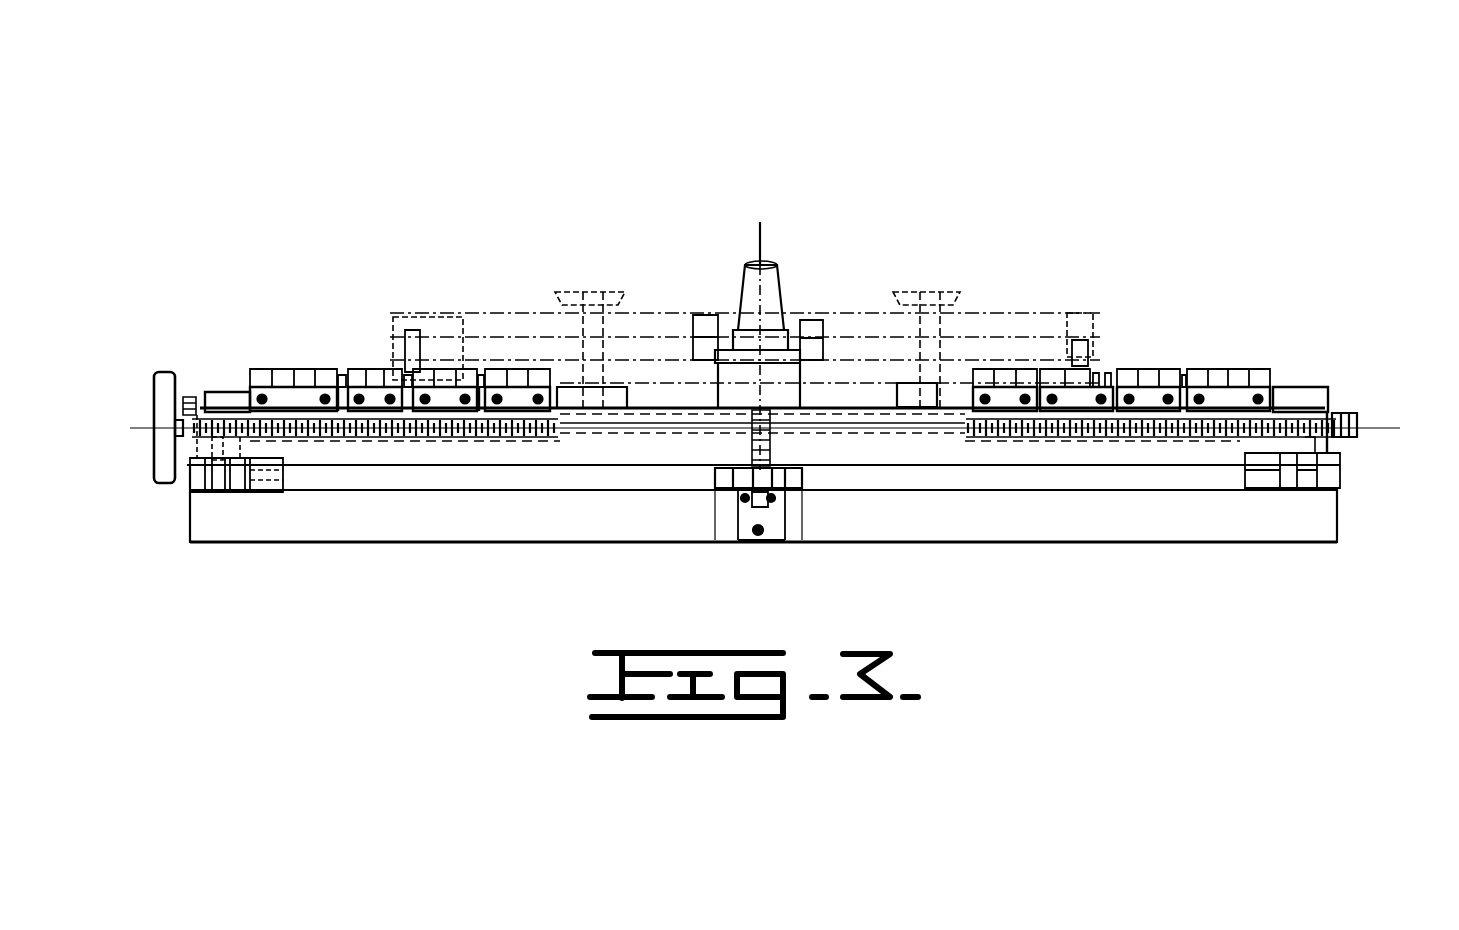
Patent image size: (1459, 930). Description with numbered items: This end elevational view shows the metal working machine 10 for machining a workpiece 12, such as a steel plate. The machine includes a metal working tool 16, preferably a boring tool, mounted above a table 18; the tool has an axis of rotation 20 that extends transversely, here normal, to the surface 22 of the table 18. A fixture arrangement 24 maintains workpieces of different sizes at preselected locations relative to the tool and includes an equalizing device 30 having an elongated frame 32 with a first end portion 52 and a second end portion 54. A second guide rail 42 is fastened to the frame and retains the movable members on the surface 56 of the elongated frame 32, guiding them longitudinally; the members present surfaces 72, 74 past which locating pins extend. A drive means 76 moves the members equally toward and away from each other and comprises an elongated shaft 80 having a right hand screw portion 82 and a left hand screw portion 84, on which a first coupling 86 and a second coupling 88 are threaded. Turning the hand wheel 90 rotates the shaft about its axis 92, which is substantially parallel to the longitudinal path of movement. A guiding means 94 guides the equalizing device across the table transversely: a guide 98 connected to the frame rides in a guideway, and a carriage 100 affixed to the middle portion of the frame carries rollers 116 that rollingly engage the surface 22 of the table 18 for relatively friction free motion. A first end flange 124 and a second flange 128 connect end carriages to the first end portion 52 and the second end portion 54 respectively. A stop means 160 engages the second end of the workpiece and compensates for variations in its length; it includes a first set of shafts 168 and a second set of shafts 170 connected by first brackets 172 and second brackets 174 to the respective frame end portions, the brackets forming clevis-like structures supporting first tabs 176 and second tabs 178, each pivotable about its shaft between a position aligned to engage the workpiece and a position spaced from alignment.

The metal working machine 10 is at (1115, 110).
The workpiece 12 is at (1103, 358).
The metal working tool 16 is at (782, 283).
The table 18 is at (1340, 512).
The axis of rotation 20 is at (760, 222).
The surface of the table 22 is at (990, 500).
The fixture arrangement 24 is at (1050, 212).
The equalizing device 30 is at (1265, 352).
The elongated frame 32 is at (1048, 447).
The second guide rail 42 is at (200, 398).
The first end portion of the elongated frame 52 is at (352, 428).
The second end portion of the elongated frame 54 is at (1120, 453).
The surface of the elongated frame 56 is at (838, 407).
The surface of the first movable member 72 is at (210, 388).
The surface of the second movable member 74 is at (1335, 385).
The drive means 76 is at (150, 410).
The elongated shaft 80 is at (640, 432).
The right hand screw portion 82 is at (432, 432).
The left hand screw portion 84 is at (1240, 445).
The first coupling 86 is at (385, 432).
The second coupling 88 is at (1147, 447).
The hand wheel 90 is at (153, 462).
The axis of the elongated shaft 92 is at (1358, 425).
The guiding means 94 is at (748, 535).
The guide 98 is at (788, 510).
The carriage 100 is at (783, 466).
The rollers 116 is at (720, 490).
The first end flange 124 is at (190, 458).
The second flange 128 is at (1340, 445).
The stop means 160 is at (333, 350).
The first set of shafts 168 is at (250, 387).
The second set of shafts 170 is at (972, 378).
The first brackets 172 is at (360, 432).
The second brackets 174 is at (1008, 410).
The first tabs 176 is at (295, 354).
The second tabs 178 is at (1023, 362).